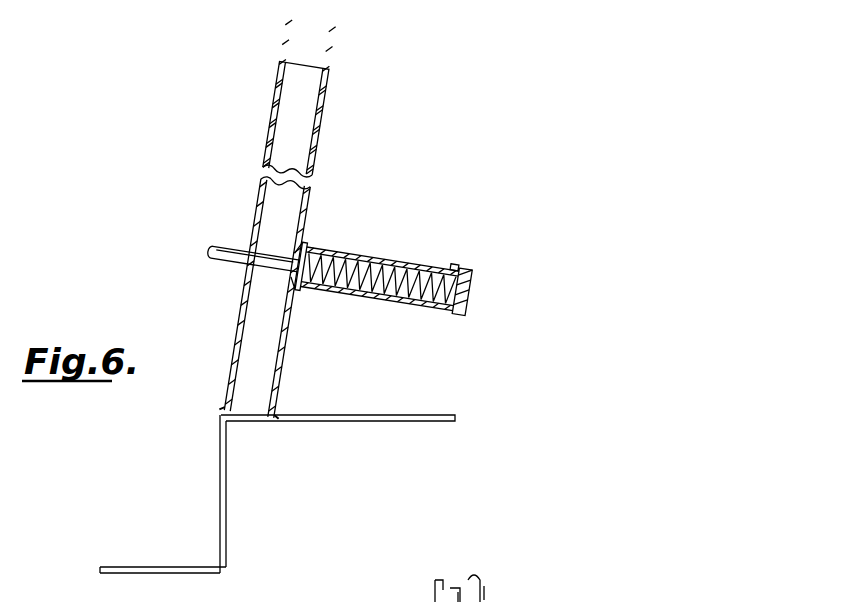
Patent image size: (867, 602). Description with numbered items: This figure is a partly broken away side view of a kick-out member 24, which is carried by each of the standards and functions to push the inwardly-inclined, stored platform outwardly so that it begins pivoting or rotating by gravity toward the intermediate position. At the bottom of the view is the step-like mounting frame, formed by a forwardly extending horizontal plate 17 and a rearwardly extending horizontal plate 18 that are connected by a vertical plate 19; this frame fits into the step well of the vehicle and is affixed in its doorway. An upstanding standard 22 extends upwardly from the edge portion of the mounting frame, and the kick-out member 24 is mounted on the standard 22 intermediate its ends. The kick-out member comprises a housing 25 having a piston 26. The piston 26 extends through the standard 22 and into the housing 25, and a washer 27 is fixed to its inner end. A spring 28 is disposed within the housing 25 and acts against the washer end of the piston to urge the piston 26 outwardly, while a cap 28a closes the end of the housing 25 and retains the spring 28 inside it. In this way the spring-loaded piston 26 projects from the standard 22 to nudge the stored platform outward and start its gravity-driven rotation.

The standard 22 is at (271, 131).
The piston 26 is at (226, 248).
The washer 27 is at (298, 247).
The housing 25 is at (350, 292).
The kick-out member 24 is at (414, 305).
The spring 28 is at (365, 267).
The cap 28a is at (453, 273).
The horizontal plate 18 is at (342, 415).
The vertical plate 19 is at (228, 497).
The horizontal plate 17 is at (145, 567).